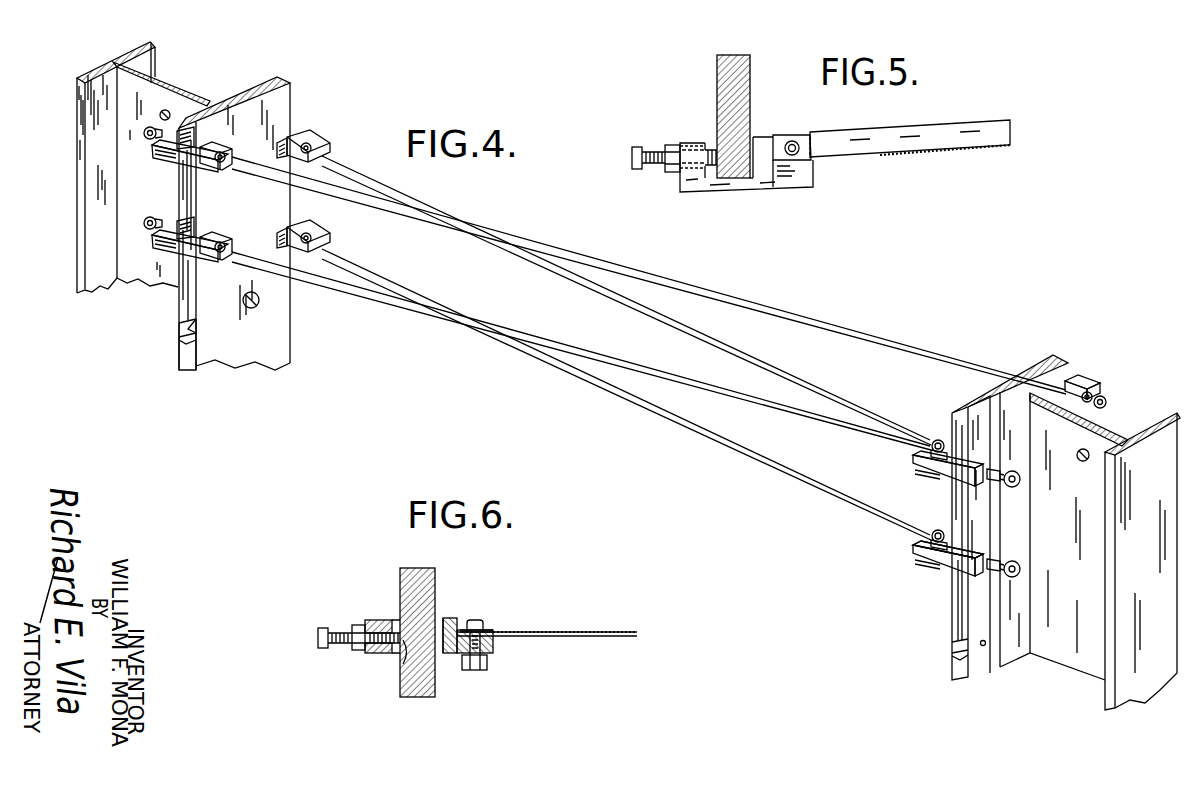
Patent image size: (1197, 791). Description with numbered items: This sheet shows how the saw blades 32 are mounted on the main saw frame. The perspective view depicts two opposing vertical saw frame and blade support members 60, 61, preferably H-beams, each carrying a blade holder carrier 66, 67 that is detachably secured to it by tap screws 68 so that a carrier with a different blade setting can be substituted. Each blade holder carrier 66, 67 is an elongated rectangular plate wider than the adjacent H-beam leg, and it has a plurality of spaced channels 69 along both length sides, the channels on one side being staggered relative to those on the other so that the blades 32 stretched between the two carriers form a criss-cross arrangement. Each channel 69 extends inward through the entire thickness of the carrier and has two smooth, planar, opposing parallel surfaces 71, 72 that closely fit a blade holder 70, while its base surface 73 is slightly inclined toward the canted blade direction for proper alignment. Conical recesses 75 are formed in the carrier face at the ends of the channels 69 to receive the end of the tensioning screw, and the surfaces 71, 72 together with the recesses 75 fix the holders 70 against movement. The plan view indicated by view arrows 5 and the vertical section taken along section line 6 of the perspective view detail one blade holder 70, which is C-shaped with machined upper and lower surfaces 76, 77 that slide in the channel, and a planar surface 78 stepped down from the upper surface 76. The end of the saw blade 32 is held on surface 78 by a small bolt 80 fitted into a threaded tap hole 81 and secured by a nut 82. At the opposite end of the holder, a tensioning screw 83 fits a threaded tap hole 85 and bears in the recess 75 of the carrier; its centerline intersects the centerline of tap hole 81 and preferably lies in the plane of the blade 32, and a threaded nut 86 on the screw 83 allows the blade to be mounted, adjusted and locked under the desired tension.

In FIG. 4, the saw blade 32 is at (757, 307).
In FIG. 5, the saw blade 32 is at (930, 144).
In FIG. 6, the saw blade 32 is at (570, 632).
In FIG. 4, the vertical saw frame and blade support member 60 is at (1152, 418).
In FIG. 4, the vertical saw frame and blade support member 61 is at (182, 92).
In FIG. 4, the blade holder carrier 66 is at (970, 401).
In FIG. 4, the blade holder carrier 67 is at (283, 95).
In FIG. 5, the blade holder carrier 67 is at (716, 72).
In FIG. 6, the blade holder carrier 67 is at (400, 577).
In FIG. 4, the tap screw 68 is at (254, 308).
In FIG. 4, the channel 69 is at (199, 346).
In FIG. 4, the blade holder 70 is at (331, 140).
In FIG. 5, the blade holder 70 is at (690, 198).
In FIG. 6, the blade holder 70 is at (367, 658).
In FIG. 4, the inner parallel surface 71 is at (178, 333).
In FIG. 4, the inner parallel surface 72 is at (180, 341).
In FIG. 4, the base surface 73 is at (198, 330).
In FIG. 4, the recess 75 is at (984, 647).
In FIG. 6, the recess 75 is at (403, 660).
In FIG. 5, the upper surface 76 is at (740, 189).
In FIG. 6, the upper surface 76 is at (440, 617).
In FIG. 6, the lower surface 77 is at (440, 657).
In FIG. 4, the planar surface 78 is at (927, 549).
In FIG. 5, the planar surface 78 is at (802, 182).
In FIG. 6, the planar surface 78 is at (490, 633).
In FIG. 5, the bolt 80 is at (792, 140).
In FIG. 6, the bolt 80 is at (477, 620).
In FIG. 6, the threaded tap hole 81 is at (494, 648).
In FIG. 6, the nut 82 is at (484, 664).
In FIG. 5, the tensioning screw 83 is at (631, 157).
In FIG. 6, the tensioning screw 83 is at (318, 638).
In FIG. 5, the threaded tap hole 85 is at (695, 146).
In FIG. 6, the threaded tap hole 85 is at (375, 620).
In FIG. 5, the nut 86 is at (675, 144).
In FIG. 6, the nut 86 is at (357, 625).
In FIG. 4, the section line 5 is at (158, 209).
In FIG. 4, the section line 6 is at (138, 215).